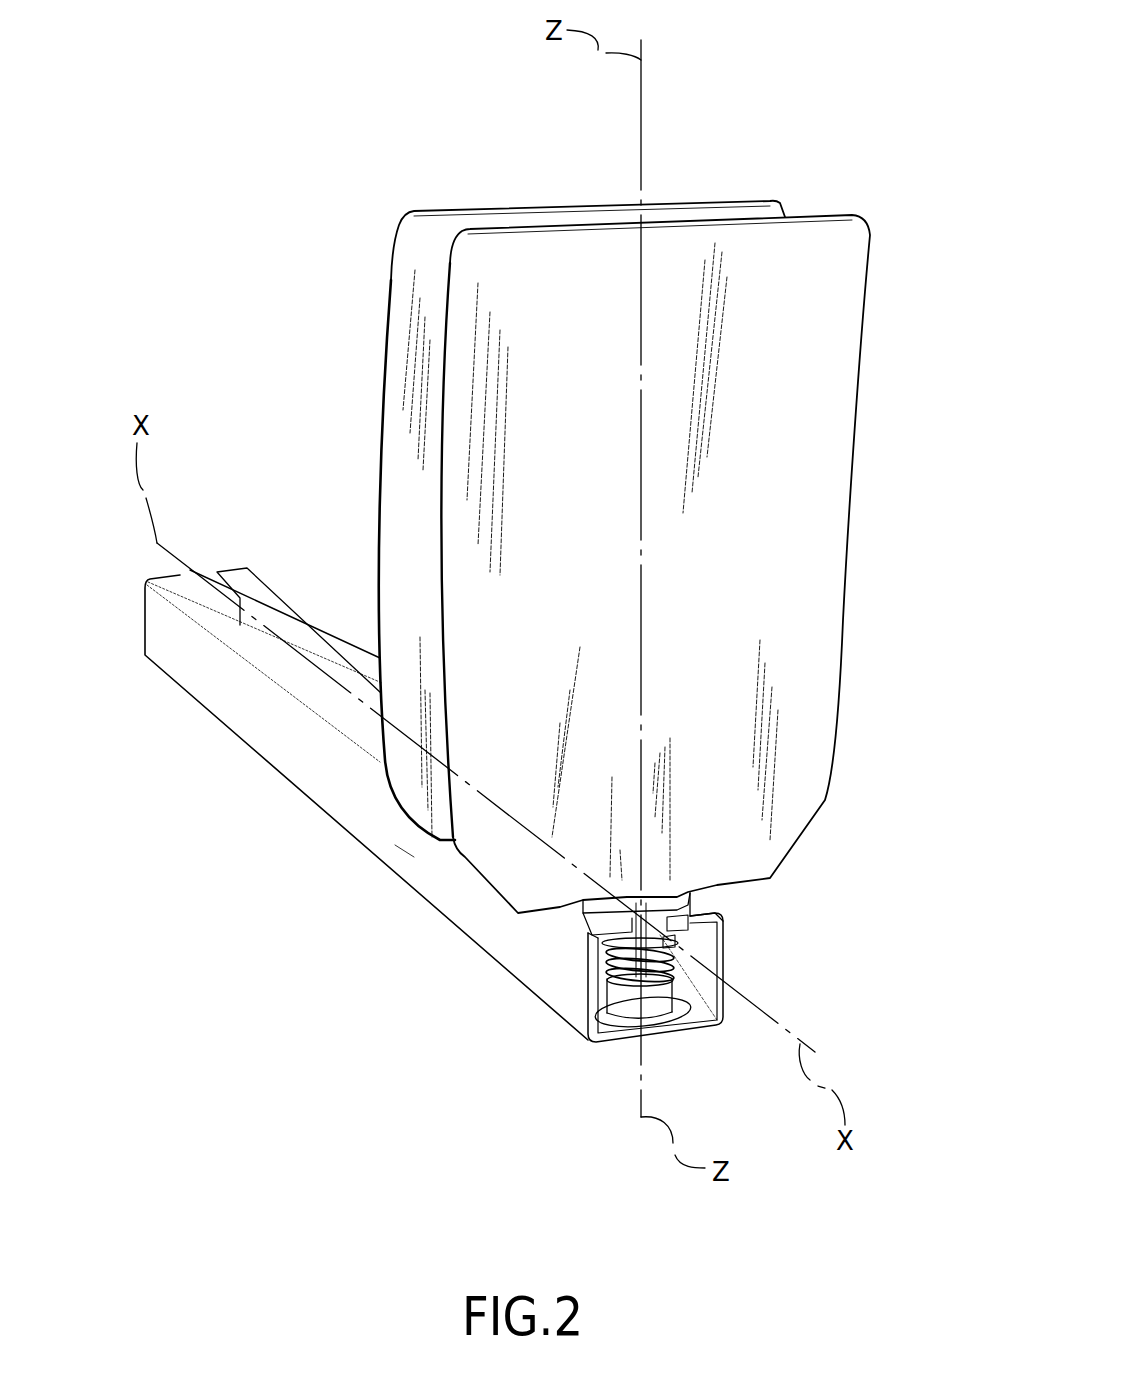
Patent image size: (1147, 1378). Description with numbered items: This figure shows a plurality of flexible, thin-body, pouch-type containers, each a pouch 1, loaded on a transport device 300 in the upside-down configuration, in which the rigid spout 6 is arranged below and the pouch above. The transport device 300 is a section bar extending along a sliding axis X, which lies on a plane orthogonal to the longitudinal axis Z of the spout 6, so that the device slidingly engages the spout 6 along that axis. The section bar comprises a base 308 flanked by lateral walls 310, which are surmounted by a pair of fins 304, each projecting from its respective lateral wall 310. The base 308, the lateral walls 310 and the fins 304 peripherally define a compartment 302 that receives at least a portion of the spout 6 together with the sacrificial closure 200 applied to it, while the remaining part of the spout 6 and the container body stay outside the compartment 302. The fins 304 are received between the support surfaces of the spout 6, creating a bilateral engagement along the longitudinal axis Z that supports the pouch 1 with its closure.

The pouch 1 is at (385, 258).
The transport device 300 is at (239, 746).
The lateral walls 310 is at (412, 853).
The fins 304 is at (602, 921).
The compartment 302 is at (603, 970).
The spout 6 is at (688, 960).
The sacrificial closure 200 is at (693, 998).
The base 308 is at (620, 1035).